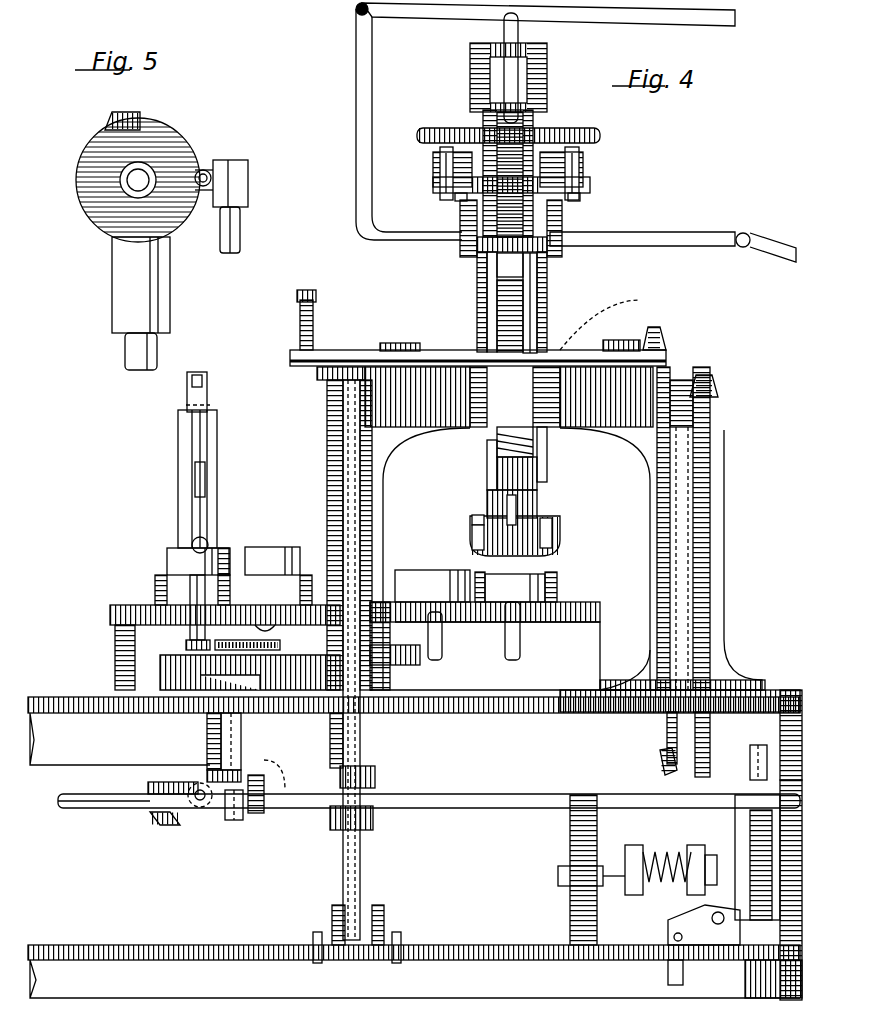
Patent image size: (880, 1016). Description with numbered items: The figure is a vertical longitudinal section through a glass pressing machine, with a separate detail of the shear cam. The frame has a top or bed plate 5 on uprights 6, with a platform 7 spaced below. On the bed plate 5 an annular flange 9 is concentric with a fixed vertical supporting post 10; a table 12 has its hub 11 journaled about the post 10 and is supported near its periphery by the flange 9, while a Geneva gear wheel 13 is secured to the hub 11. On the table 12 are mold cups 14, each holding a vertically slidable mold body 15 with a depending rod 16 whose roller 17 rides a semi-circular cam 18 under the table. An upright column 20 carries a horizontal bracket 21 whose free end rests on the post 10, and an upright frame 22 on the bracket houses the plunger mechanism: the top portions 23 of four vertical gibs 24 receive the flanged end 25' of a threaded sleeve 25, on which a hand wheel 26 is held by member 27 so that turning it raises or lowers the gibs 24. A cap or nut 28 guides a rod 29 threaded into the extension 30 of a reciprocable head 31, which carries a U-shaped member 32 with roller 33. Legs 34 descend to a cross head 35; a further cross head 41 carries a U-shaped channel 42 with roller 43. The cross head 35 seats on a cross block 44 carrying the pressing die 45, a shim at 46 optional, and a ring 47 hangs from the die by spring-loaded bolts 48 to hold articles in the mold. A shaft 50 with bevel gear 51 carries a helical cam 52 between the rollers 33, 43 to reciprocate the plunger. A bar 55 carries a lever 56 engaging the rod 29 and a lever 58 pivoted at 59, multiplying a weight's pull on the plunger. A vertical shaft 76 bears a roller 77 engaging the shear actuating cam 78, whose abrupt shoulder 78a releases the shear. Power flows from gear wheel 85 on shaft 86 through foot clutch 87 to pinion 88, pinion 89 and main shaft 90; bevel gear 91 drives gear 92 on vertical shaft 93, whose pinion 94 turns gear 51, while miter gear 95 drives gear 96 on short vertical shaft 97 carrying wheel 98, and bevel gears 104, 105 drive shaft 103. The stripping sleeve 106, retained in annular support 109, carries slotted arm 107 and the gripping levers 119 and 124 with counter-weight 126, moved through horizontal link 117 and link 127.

In FIG. 4, the top or bed plate 5 is at (40, 697).
In FIG. 4, the uprights 6 is at (782, 930).
In FIG. 4, the platform 7 is at (452, 945).
In FIG. 4, the annular flange 9 is at (115, 658).
In FIG. 5, the fixed vertical supporting post 10 is at (158, 358).
In FIG. 4, the fixed vertical supporting post 10 is at (372, 900).
In FIG. 4, the hub 11 is at (390, 645).
In FIG. 4, the table 12 is at (600, 612).
In FIG. 4, the Geneva gear wheel 13 is at (408, 665).
In FIG. 4, the mold cups 14 is at (400, 570).
In FIG. 4, the mold body 15 is at (540, 574).
In FIG. 4, the rod 16 is at (520, 633).
In FIG. 4, the roller 17 is at (440, 655).
In FIG. 4, the cam 18 is at (186, 644).
In FIG. 4, the upright column 20 is at (714, 566).
In FIG. 4, the horizontal bracket 21 is at (598, 432).
In FIG. 4, the upright frame 22 is at (533, 296).
In FIG. 4, the top portions of gibs 23 is at (462, 204).
In FIG. 4, the vertical gibs 24 is at (478, 348).
In FIG. 4, the threaded sleeve 25 is at (535, 166).
In FIG. 4, the flanged end of threaded sleeve 25' is at (533, 183).
In FIG. 4, the hand wheel 26 is at (600, 135).
In FIG. 4, the member 27 is at (583, 157).
In FIG. 4, the cap or nut 28 is at (547, 72).
In FIG. 4, the rod 29 is at (518, 30).
In FIG. 4, the extension of head 30 is at (433, 160).
In FIG. 4, the reciprocable head 31 is at (462, 236).
In FIG. 4, the U-shaped member 32 is at (537, 268).
In FIG. 4, the cam engaging roller 33 is at (497, 265).
In FIG. 4, the legs 34 is at (487, 330).
In FIG. 4, the cross head 35 is at (500, 478).
In FIG. 4, the reciprocable cross head 41 is at (547, 450).
In FIG. 4, the U-shaped channel 42 is at (492, 438).
In FIG. 4, the cam engaging roller 43 is at (598, 350).
In FIG. 4, the cross block 44 is at (490, 500).
In FIG. 4, the pressing die 45 is at (555, 533).
In FIG. 4, the shim 46 is at (518, 510).
In FIG. 4, the ring 47 is at (472, 545).
In FIG. 4, the bolts 48 is at (470, 520).
In FIG. 5, the shaft 50 is at (135, 183).
In FIG. 4, the shaft 50 is at (640, 340).
In FIG. 4, the bevel gear wheel 51 is at (666, 338).
In FIG. 4, the cam 52 is at (497, 302).
In FIG. 4, the bar 55 is at (356, 223).
In FIG. 4, the lever 56 is at (442, 12).
In FIG. 4, the lever 58 is at (775, 250).
In FIG. 4, the pivot 59 is at (742, 232).
In FIG. 5, the vertical shaft 76 is at (240, 228).
In FIG. 5, the cam engaging roller 77 is at (204, 170).
In FIG. 5, the actuating cam 78 is at (85, 142).
In FIG. 4, the actuating cam 78 is at (313, 300).
In FIG. 5, the shoulder 78a is at (138, 122).
In FIG. 4, the gear wheel 85 is at (570, 900).
In FIG. 4, the shaft 86 is at (560, 868).
In FIG. 4, the foot clutch 87 is at (697, 856).
In FIG. 4, the pinion 88 is at (758, 915).
In FIG. 4, the pinion 89 is at (790, 690).
In FIG. 4, the main power shaft 90 is at (478, 808).
In FIG. 4, the bevel gear 91 is at (718, 760).
In FIG. 4, the bevel gear 92 is at (662, 750).
In FIG. 4, the vertical shaft 93 is at (718, 432).
In FIG. 4, the pinion 94 is at (716, 385).
In FIG. 4, the miter gear 95 is at (262, 820).
In FIG. 4, the gear 96 is at (212, 770).
In FIG. 4, the short vertical shaft 97 is at (207, 725).
In FIG. 4, the wheel 98 is at (292, 675).
In FIG. 4, the shaft 103 is at (228, 818).
In FIG. 4, the bevel gear 104 is at (197, 808).
In FIG. 4, the bevel gear 105 is at (165, 824).
In FIG. 4, the sleeve 106 is at (178, 433).
In FIG. 4, the slotted arm 107 is at (200, 478).
In FIG. 4, the annular casing or support 109 is at (226, 548).
In FIG. 4, the horizontal link 117 is at (200, 380).
In FIG. 4, the vertical lever 119 is at (200, 426).
In FIG. 4, the second lever 124 is at (196, 506).
In FIG. 4, the counter-weight 126 is at (194, 540).
In FIG. 4, the link 127 is at (190, 405).